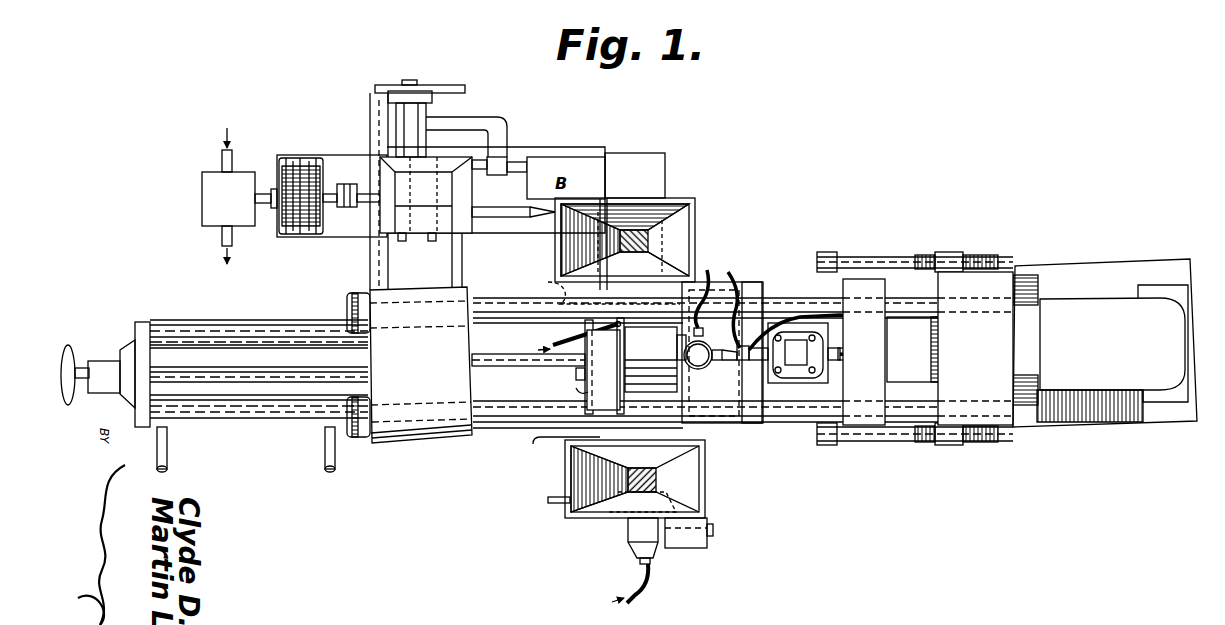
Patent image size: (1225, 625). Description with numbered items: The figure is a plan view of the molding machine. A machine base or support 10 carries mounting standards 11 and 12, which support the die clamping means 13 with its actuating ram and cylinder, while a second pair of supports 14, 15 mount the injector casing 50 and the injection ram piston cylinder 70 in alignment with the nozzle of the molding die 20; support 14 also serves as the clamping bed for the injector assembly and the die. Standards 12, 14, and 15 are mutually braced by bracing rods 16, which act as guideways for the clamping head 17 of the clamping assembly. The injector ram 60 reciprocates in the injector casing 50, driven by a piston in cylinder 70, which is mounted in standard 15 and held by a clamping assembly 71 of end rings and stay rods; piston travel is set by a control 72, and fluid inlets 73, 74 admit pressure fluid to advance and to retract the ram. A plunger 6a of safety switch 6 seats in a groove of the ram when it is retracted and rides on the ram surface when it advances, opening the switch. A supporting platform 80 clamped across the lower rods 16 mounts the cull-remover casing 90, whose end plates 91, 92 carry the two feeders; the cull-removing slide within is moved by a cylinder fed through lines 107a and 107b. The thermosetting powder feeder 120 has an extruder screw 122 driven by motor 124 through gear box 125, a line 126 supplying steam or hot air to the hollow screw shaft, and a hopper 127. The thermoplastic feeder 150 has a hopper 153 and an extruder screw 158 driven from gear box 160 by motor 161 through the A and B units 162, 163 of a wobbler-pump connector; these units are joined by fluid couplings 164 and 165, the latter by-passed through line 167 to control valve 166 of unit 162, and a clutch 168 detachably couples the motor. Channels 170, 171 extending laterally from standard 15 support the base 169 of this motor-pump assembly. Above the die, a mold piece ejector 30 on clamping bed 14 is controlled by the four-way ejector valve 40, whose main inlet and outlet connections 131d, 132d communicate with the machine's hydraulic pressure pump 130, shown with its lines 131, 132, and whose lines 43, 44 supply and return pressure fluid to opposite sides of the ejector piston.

The machine base 10 is at (1105, 343).
The mounting standard 11 is at (1163, 403).
The mounting standard 12 is at (975, 348).
The die clamping means 13 is at (1114, 343).
The support 14 is at (722, 352).
The support 15 is at (409, 365).
The bracing rods 16 is at (500, 297).
The clamping head 17 is at (864, 352).
The molding die 20 is at (800, 392).
The mold piece ejector 30 is at (794, 353).
The ejector control valve 40 is at (710, 348).
The pressure fluid line 43 is at (740, 345).
The pressure fluid line 44 is at (836, 315).
The injector casing 50 is at (655, 359).
The injector ram 60 is at (494, 358).
The safety switch 6 is at (575, 392).
The switch plunger 6a is at (575, 373).
The injection ram piston cylinder 70 is at (251, 373).
The cylinder clamping assembly 71 is at (240, 342).
The stop control 72 is at (69, 353).
The fluid inlet 73 is at (168, 449).
The fluid inlet 74 is at (336, 461).
The supporting platform 80 is at (566, 326).
The cull-remover casing 90 is at (604, 366).
The end plate 91 is at (607, 382).
The end plate 92 is at (604, 286).
The fluid line 107a is at (548, 503).
The fluid line 107b is at (535, 444).
The thermosetting plastic molding powder feeder 120 is at (708, 477).
The extruder screw 122 is at (652, 483).
The motor 124 is at (694, 549).
The gear box 125 is at (628, 537).
The heating fluid line 126 is at (640, 581).
The hopper 127 is at (685, 483).
The pump 130 is at (200, 209).
The outlet 131 is at (233, 239).
The inlet 132 is at (233, 165).
The main inlet connection 131d is at (733, 280).
The main outlet connection 132d is at (713, 272).
The thermoplastic feeder 150 is at (658, 227).
The hopper 153 is at (680, 253).
The extruder screw 158 is at (688, 207).
The gear box 160 is at (635, 175).
The motor 161 is at (300, 178).
The A unit 162 is at (466, 181).
The B unit 163 is at (583, 164).
The fluid coupling 164 is at (500, 220).
The fluid coupling 165 is at (506, 158).
The control valve 166 is at (435, 91).
The by-pass line 167 is at (468, 123).
The clutch 168 is at (349, 184).
The base 169 is at (355, 218).
The channel 170 is at (370, 265).
The channel 171 is at (456, 287).